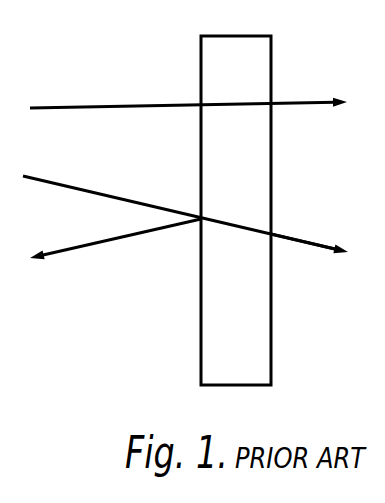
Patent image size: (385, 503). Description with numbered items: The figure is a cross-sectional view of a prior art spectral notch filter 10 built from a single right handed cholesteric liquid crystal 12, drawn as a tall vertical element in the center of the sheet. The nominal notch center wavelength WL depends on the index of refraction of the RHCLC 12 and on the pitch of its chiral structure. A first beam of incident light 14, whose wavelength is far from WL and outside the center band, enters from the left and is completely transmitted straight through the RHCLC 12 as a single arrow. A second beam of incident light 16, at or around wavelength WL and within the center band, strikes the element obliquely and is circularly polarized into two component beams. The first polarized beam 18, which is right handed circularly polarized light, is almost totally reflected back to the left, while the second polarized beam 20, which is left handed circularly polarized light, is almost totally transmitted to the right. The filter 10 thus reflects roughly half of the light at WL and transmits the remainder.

The spectral notch filter 10 is at (307, 46).
The right handed cholesteric liquid crystal 12 is at (232, 36).
The first beam of incident light 14 is at (100, 60).
The second beam of incident light 16 is at (105, 195).
The first polarized beam 18 is at (168, 225).
The second polarized beam 20 is at (285, 238).